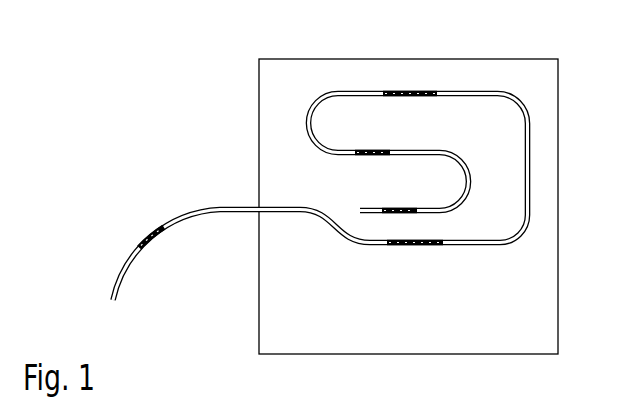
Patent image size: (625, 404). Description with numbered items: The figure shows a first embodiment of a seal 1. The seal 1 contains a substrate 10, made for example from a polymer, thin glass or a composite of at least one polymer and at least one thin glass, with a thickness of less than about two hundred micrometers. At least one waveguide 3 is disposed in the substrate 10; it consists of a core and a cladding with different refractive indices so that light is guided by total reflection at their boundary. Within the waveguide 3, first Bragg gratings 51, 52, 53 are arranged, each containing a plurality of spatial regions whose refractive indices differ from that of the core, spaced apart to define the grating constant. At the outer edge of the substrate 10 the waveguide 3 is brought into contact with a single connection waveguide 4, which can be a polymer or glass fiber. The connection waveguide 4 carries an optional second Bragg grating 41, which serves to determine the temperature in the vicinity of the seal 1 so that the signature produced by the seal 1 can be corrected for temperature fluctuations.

The seal 1 is at (170, 87).
The waveguide 3 is at (528, 163).
The connection waveguide 4 is at (118, 280).
The substrate 10 is at (543, 310).
The second Bragg grating 41 is at (155, 236).
The first Bragg grating 51 is at (400, 246).
The first Bragg grating 52 is at (403, 91).
The first Bragg grating 53 is at (353, 155).